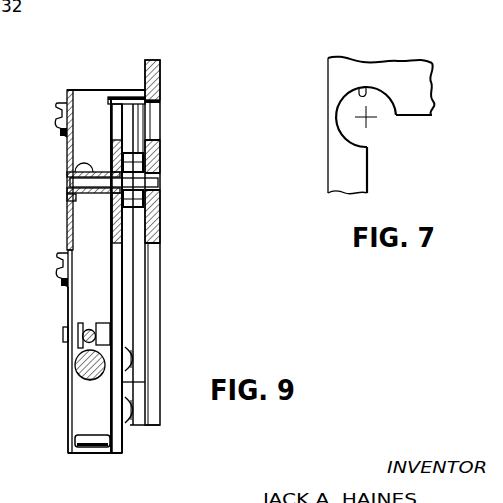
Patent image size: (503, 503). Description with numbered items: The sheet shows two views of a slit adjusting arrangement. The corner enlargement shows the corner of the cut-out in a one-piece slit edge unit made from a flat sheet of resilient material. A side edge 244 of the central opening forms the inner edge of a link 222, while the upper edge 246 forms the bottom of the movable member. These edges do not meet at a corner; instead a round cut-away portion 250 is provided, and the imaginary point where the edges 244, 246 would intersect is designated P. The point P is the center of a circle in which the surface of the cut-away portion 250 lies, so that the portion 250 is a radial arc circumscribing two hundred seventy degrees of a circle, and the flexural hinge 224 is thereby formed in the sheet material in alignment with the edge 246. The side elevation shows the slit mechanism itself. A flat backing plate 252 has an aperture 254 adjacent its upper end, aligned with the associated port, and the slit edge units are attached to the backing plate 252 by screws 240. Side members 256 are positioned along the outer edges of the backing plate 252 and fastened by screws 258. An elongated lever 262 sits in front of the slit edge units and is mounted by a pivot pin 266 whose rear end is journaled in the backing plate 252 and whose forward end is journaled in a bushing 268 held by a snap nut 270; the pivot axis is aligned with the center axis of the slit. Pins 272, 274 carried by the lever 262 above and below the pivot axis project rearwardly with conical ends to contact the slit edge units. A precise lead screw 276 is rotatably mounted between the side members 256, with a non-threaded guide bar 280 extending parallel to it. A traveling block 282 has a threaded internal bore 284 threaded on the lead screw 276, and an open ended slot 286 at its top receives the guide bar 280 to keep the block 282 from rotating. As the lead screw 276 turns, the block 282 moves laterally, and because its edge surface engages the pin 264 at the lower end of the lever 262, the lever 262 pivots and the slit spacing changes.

In FIG. 7, the links 222 is at (345, 159).
In FIG. 7, the flexural hinges 224 is at (330, 117).
In FIG. 9, the screws 240 is at (133, 413).
In FIG. 7, the side edges 244 is at (372, 174).
In FIG. 7, the upper edge 246 is at (422, 116).
In FIG. 7, the cut-away portion 250 is at (363, 90).
In FIG. 9, the backing plate 252 is at (156, 286).
In FIG. 9, the aperture 254 is at (152, 140).
In FIG. 9, the side members 256 is at (94, 100).
In FIG. 9, the screws 258 is at (57, 106).
In FIG. 9, the lever 262 is at (117, 308).
In FIG. 9, the pin 264 is at (88, 455).
In FIG. 9, the pivot pin 266 is at (100, 189).
In FIG. 9, the bushing 268 is at (75, 160).
In FIG. 9, the snap nut 270 is at (72, 197).
In FIG. 9, the pin 272 is at (133, 162).
In FIG. 9, the pin 274 is at (133, 202).
In FIG. 9, the lead screw 276 is at (75, 364).
In FIG. 9, the guide bar 280 is at (88, 327).
In FIG. 9, the traveling block 282 is at (85, 413).
In FIG. 9, the threaded internal bore 284 is at (88, 385).
In FIG. 9, the slot 286 is at (84, 345).
In FIG. 7, the point P is at (369, 120).